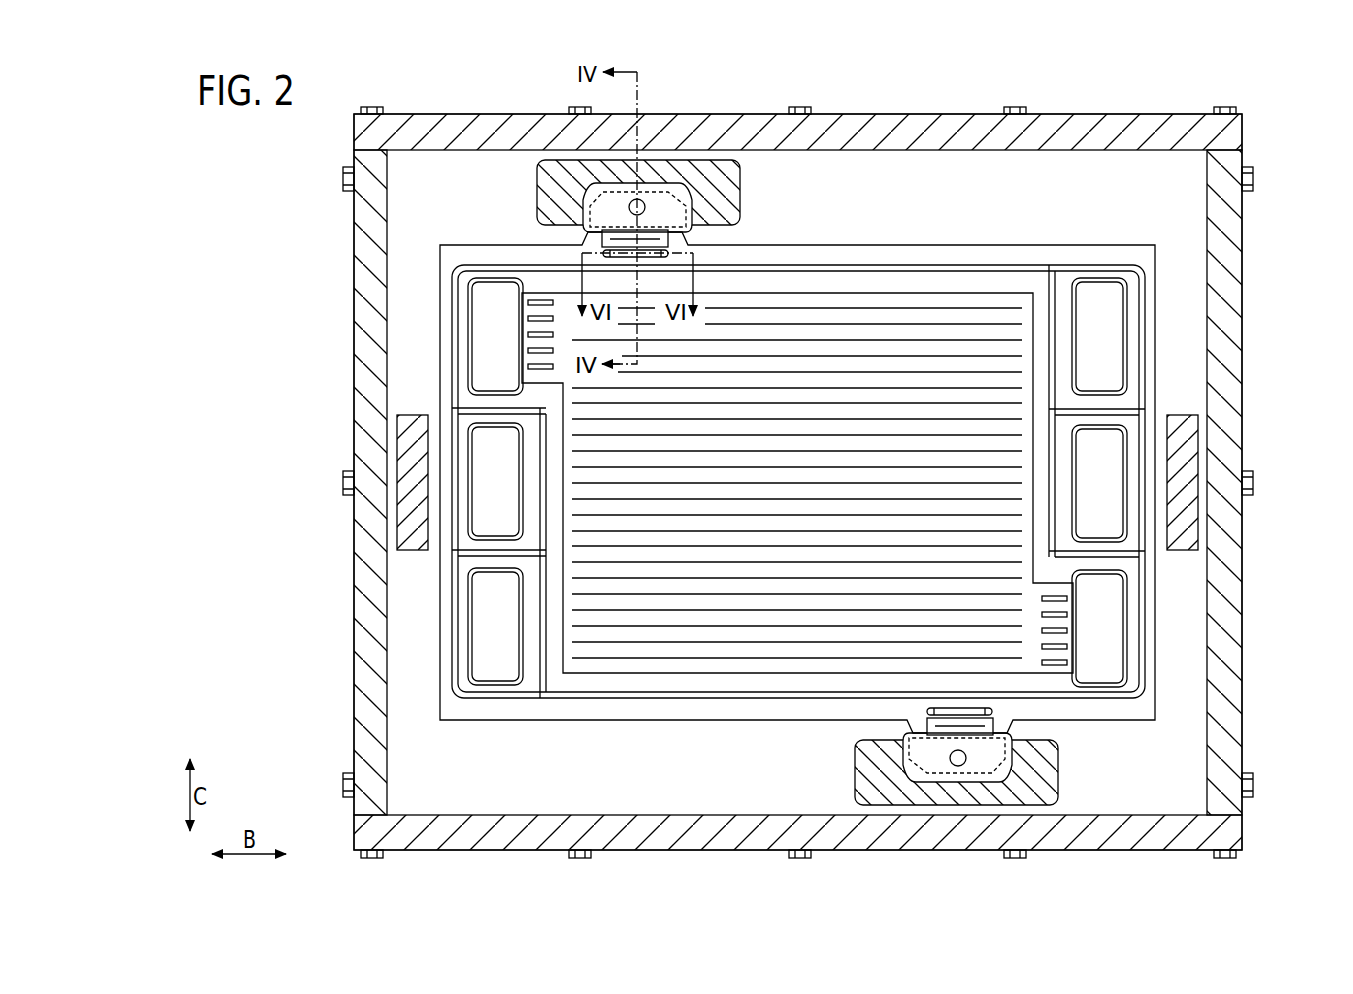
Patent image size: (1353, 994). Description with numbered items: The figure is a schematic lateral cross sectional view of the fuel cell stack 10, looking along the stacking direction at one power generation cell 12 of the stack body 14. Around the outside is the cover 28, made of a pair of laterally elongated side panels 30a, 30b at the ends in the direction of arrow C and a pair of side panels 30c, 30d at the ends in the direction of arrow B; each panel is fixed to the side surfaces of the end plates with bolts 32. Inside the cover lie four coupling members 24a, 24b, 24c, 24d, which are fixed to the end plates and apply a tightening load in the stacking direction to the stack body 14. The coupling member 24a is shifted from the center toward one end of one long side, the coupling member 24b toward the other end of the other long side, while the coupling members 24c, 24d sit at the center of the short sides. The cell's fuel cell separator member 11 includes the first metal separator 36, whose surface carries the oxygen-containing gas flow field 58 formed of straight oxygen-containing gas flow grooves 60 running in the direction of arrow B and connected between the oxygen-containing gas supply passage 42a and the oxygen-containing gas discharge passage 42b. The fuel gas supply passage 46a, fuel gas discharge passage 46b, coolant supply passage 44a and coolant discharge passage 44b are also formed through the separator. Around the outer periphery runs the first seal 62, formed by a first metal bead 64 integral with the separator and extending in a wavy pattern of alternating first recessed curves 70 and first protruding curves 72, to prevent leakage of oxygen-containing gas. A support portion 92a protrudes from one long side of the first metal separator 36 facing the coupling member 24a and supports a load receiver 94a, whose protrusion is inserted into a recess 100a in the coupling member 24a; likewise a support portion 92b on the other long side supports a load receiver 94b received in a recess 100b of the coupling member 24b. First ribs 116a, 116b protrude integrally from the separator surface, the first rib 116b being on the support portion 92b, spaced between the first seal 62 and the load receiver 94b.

The fuel cell stack 10 is at (286, 148).
The fuel cell separator member 11 is at (801, 444).
The power generation cell 12 is at (798, 450).
The stack body 14 is at (798, 450).
The coupling member 24a is at (712, 167).
The coupling member 24b is at (873, 793).
The coupling member 24c is at (412, 518).
The coupling member 24d is at (1183, 503).
The cover 28 is at (798, 106).
The side panel 30a is at (1108, 122).
The side panel 30b is at (530, 838).
The side panel 30c is at (360, 660).
The side panel 30d is at (1225, 655).
The bolt 32 is at (372, 106).
The first metal separator 36 is at (1122, 250).
The oxygen-containing gas supply passage 42a is at (490, 325).
The oxygen-containing gas discharge passage 42b is at (1105, 622).
The coolant supply passage 44a is at (490, 452).
The coolant discharge passage 44b is at (1105, 457).
The fuel gas supply passage 46a is at (1105, 325).
The fuel gas discharge passage 46b is at (490, 632).
The oxygen-containing gas flow field 58 is at (797, 434).
The oxygen-containing gas flow groove 60 is at (960, 305).
The first seal 62 is at (798, 429).
The first metal bead 64 is at (798, 429).
The first recessed curve 70 is at (818, 265).
The first protruding curve 72 is at (870, 271).
The support portion 92a is at (683, 237).
The support portion 92b is at (912, 722).
The load receiver 94a is at (632, 197).
The load receiver 94b is at (1014, 810).
The recess 100a is at (587, 196).
The recess 100b is at (912, 772).
The first rib 116a is at (647, 250).
The first rib 116b is at (942, 716).